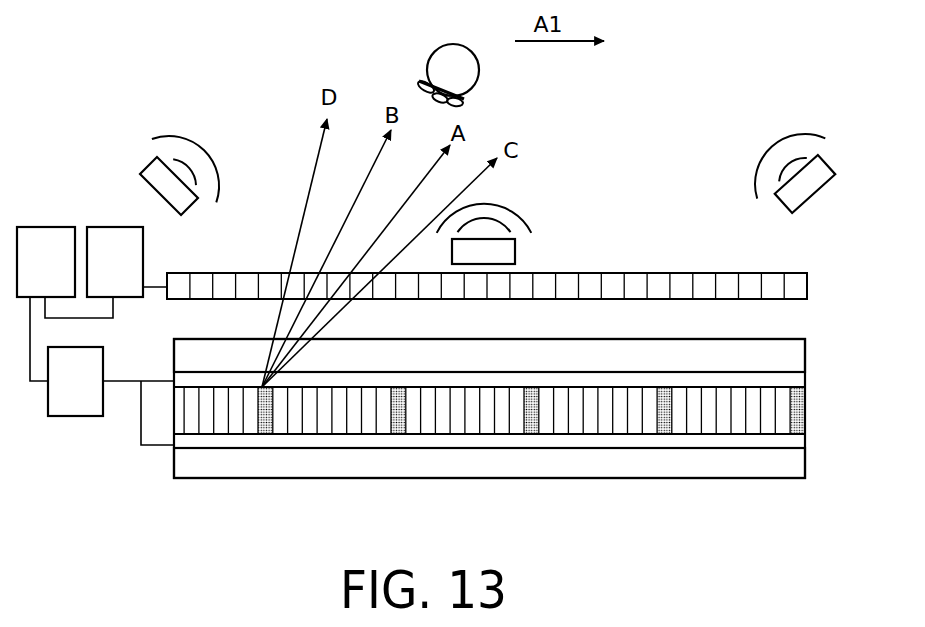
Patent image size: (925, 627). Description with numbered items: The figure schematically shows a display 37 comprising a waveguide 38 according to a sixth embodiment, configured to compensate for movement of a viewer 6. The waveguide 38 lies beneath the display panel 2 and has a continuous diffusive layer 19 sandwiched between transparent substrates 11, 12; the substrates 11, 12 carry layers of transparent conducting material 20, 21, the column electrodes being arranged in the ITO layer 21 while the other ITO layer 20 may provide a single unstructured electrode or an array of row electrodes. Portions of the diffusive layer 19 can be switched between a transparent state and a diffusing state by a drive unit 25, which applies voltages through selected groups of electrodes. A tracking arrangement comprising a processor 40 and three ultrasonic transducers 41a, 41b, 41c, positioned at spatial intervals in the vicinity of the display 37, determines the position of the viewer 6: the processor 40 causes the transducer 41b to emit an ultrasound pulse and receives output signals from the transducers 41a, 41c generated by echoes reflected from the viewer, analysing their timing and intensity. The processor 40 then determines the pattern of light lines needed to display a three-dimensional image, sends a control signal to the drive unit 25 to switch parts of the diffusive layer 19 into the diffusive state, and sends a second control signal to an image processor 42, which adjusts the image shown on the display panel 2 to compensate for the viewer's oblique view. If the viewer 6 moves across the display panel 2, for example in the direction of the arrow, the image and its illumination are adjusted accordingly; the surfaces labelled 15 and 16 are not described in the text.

The display panel 2 is at (768, 271).
The viewer 6 is at (479, 84).
The transparent substrate 11 is at (805, 352).
The transparent substrate 12 is at (805, 468).
The display panel 15 is at (794, 338).
The backlight / rear surface 16 is at (656, 480).
The continuous diffusive layer 19 is at (808, 399).
The transparent conducting material layer 20 is at (805, 382).
The transparent conducting material layer 21 is at (805, 438).
The drive unit 25 is at (75, 416).
The display 37 is at (755, 87).
The waveguide 38 is at (165, 493).
The processor 40 is at (45, 227).
The ultrasonic transducer 41a is at (148, 165).
The ultrasonic transducer 41b is at (515, 252).
The ultrasonic transducer 41c is at (800, 213).
The image processor 42 is at (113, 227).